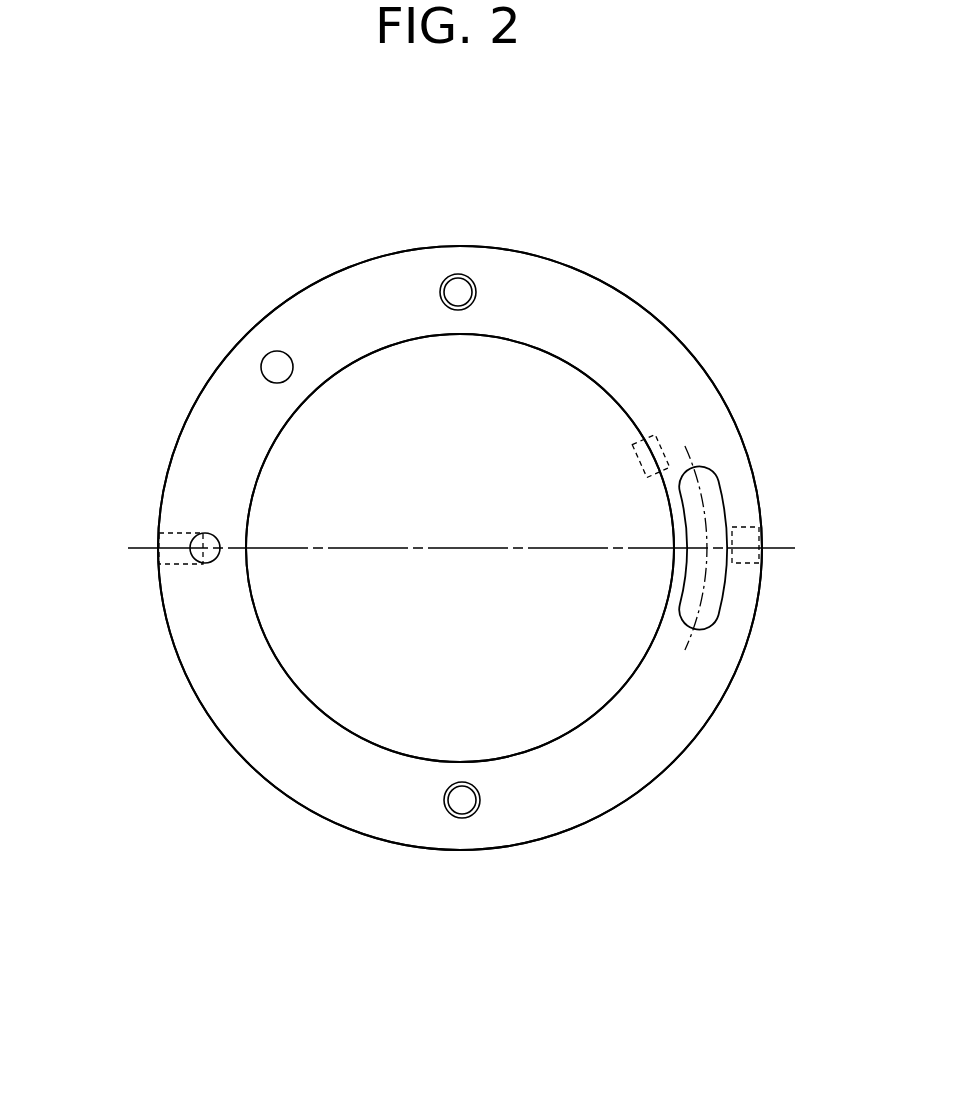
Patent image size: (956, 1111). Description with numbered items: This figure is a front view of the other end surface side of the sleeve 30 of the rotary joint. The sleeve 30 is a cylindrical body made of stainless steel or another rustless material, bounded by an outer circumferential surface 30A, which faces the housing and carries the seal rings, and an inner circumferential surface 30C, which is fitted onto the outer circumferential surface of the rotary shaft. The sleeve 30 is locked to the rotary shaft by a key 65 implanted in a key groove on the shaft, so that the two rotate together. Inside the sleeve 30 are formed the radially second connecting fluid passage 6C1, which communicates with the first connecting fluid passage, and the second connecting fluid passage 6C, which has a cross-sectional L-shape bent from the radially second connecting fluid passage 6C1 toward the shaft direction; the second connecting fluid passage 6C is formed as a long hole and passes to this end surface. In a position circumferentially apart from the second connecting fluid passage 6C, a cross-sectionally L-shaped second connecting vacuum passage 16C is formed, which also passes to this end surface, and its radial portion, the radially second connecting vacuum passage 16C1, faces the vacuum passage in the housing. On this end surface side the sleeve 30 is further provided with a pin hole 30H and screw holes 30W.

The sleeve 30 is at (599, 277).
The outer circumferential surface 30A is at (225, 742).
The inner circumferential surface 30C is at (462, 333).
The screw holes 30W is at (462, 273).
The pin hole 30H is at (266, 353).
The second connecting vacuum passage 16C is at (194, 560).
The radially second connecting vacuum passage 16C1 is at (159, 535).
The second connecting fluid passage 6C is at (725, 587).
The radially second connecting fluid passage 6C1 is at (752, 535).
The key 65 is at (656, 440).